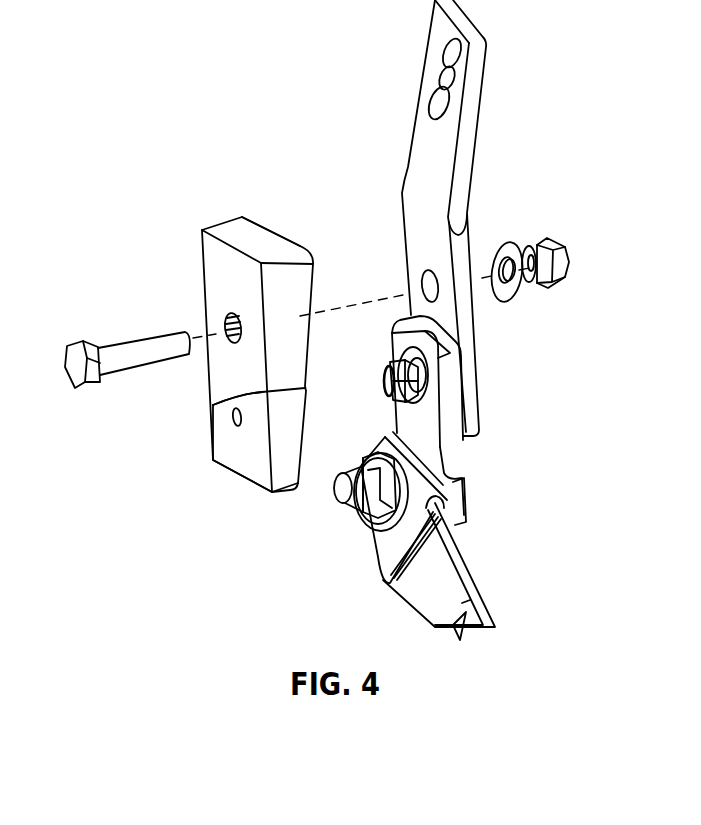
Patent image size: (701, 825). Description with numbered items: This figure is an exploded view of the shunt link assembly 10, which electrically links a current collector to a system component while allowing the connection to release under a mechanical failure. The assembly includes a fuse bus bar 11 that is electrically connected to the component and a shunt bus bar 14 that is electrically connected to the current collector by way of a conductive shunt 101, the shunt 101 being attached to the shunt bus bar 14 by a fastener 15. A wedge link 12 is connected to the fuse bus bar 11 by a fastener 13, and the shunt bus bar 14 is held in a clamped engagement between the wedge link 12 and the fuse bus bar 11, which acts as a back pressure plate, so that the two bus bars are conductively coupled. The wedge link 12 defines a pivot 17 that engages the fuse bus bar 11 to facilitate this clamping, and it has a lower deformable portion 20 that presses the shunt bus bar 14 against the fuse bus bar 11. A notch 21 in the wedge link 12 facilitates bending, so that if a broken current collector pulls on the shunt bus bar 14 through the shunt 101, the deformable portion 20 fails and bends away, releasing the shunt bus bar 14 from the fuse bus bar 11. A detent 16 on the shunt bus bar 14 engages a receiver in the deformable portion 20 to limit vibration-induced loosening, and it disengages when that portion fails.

The shunt link assembly 10 is at (235, 126).
The fuse bus bar 11 is at (472, 100).
The wedge link 12 is at (216, 260).
The fastener 13 is at (108, 353).
The shunt bus bar 14 is at (460, 447).
The fastener 15 is at (346, 495).
The detent 16 is at (389, 392).
The pivot 17 is at (269, 231).
The lower deformable portion 20 is at (238, 462).
The notch 21 is at (213, 408).
The shunt 101 is at (442, 572).